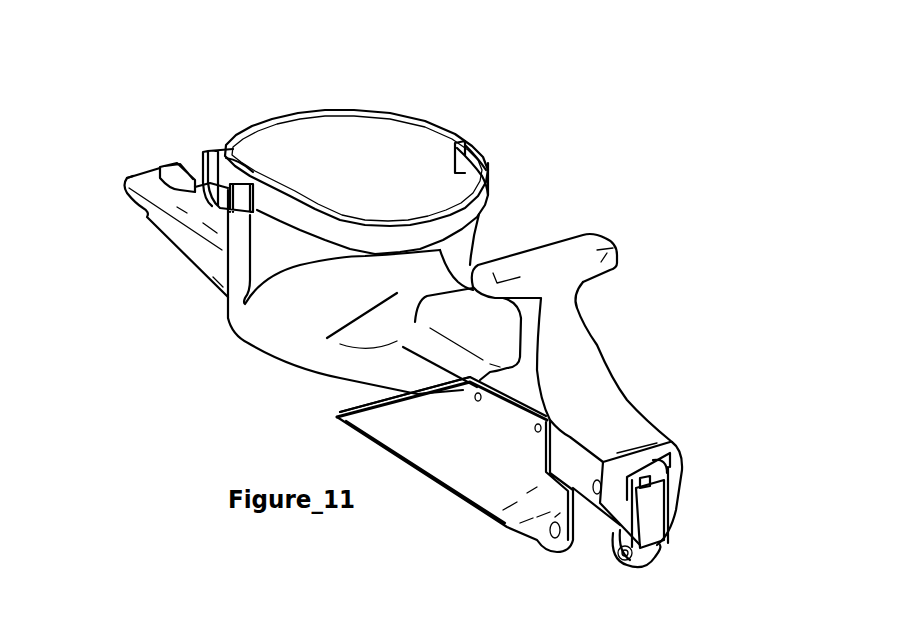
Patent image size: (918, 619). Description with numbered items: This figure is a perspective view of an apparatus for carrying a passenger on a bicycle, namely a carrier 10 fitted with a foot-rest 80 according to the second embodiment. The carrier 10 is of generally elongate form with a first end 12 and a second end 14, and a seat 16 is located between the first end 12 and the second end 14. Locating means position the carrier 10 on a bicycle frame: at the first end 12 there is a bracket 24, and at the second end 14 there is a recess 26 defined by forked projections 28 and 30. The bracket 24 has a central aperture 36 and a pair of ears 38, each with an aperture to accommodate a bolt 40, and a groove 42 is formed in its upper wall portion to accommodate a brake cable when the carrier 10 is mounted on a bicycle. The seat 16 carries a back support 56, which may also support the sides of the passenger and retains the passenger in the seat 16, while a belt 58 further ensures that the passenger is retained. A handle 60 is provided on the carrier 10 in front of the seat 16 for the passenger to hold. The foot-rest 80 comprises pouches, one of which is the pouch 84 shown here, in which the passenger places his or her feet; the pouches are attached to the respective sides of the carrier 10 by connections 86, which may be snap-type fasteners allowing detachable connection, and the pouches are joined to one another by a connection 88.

The carrier 10 is at (533, 104).
The first end 12 is at (680, 413).
The second end 14 is at (135, 214).
The seat 16 is at (295, 318).
The bracket 24 is at (673, 510).
The recess 26 is at (160, 160).
The forked projection 28 is at (183, 150).
The forked projection 30 is at (132, 176).
The central aperture 36 is at (648, 518).
The ears 38 is at (660, 553).
The bolt 40 is at (619, 560).
The groove 42 is at (650, 487).
The back support 56 is at (361, 125).
The belt 58 is at (490, 207).
The handle 60 is at (615, 246).
The foot-rest 80 is at (345, 458).
The pouch 84 is at (413, 440).
The connections 86 is at (548, 425).
The connection 88 is at (553, 538).